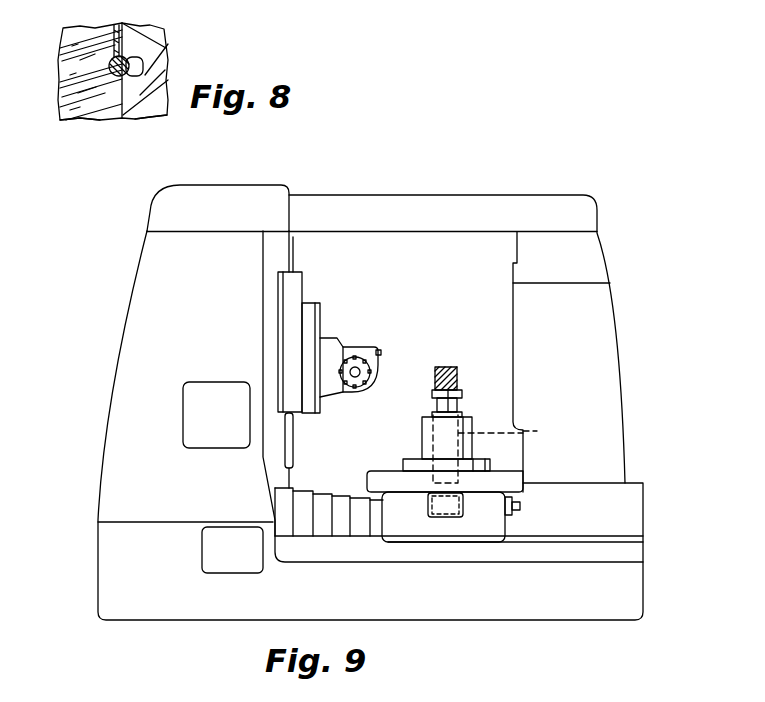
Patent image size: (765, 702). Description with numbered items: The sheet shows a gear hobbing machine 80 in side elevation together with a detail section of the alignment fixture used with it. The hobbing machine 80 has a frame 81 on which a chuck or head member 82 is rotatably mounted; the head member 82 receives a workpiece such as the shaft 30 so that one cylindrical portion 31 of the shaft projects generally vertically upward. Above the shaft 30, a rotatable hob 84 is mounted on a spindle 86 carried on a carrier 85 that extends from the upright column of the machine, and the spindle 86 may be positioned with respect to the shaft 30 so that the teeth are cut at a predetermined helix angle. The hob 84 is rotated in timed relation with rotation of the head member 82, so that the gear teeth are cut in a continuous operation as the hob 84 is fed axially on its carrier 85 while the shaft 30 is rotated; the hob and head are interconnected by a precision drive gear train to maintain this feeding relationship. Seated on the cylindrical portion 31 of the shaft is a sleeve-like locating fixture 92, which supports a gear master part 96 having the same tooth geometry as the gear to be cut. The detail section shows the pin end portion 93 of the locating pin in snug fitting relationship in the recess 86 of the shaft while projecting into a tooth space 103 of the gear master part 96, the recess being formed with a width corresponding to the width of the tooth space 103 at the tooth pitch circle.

In FIG. 9, the shaft 30 is at (465, 453).
In FIG. 8, the cylindrical portion 31 is at (150, 117).
In FIG. 9, the cylindrical portion 31 is at (438, 405).
In FIG. 9, the gear hobbing machine 80 is at (487, 190).
In FIG. 9, the frame 81 is at (472, 612).
In FIG. 9, the head member 82 is at (422, 436).
In FIG. 9, the hob 84 is at (378, 367).
In FIG. 9, the carrier 85 is at (296, 349).
In FIG. 8, the spindle 86 is at (145, 62).
In FIG. 9, the spindle 86 is at (355, 368).
In FIG. 9, the locating fixture 92 is at (462, 392).
In FIG. 8, the pin end portion 93 is at (116, 25).
In FIG. 8, the gear master part 96 is at (75, 120).
In FIG. 9, the gear master part 96 is at (460, 371).
In FIG. 8, the tooth space 103 is at (60, 52).